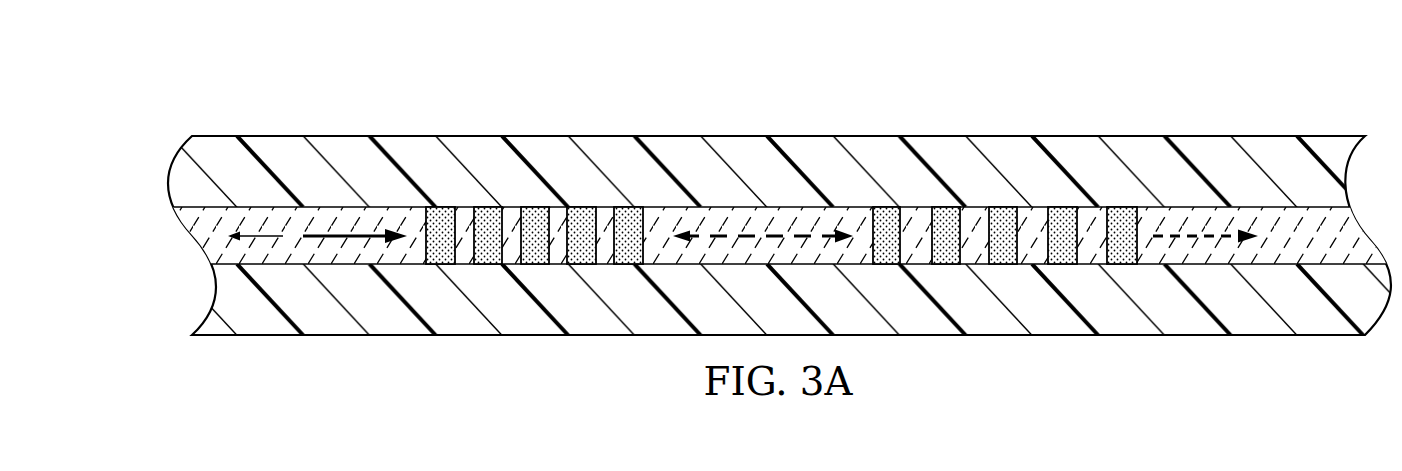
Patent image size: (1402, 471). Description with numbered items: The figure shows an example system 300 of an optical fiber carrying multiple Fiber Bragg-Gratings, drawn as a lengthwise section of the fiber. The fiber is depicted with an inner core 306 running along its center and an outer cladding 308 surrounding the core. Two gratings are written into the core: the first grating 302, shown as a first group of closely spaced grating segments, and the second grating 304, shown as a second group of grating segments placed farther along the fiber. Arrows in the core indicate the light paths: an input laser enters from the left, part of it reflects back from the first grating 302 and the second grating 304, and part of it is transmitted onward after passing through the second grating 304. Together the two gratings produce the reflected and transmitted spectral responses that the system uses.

The optical fiber 300 is at (506, 78).
The FBG #1 302 is at (427, 343).
The FBG #2 304 is at (874, 343).
The core 306 is at (211, 251).
The cladding 308 is at (182, 178).